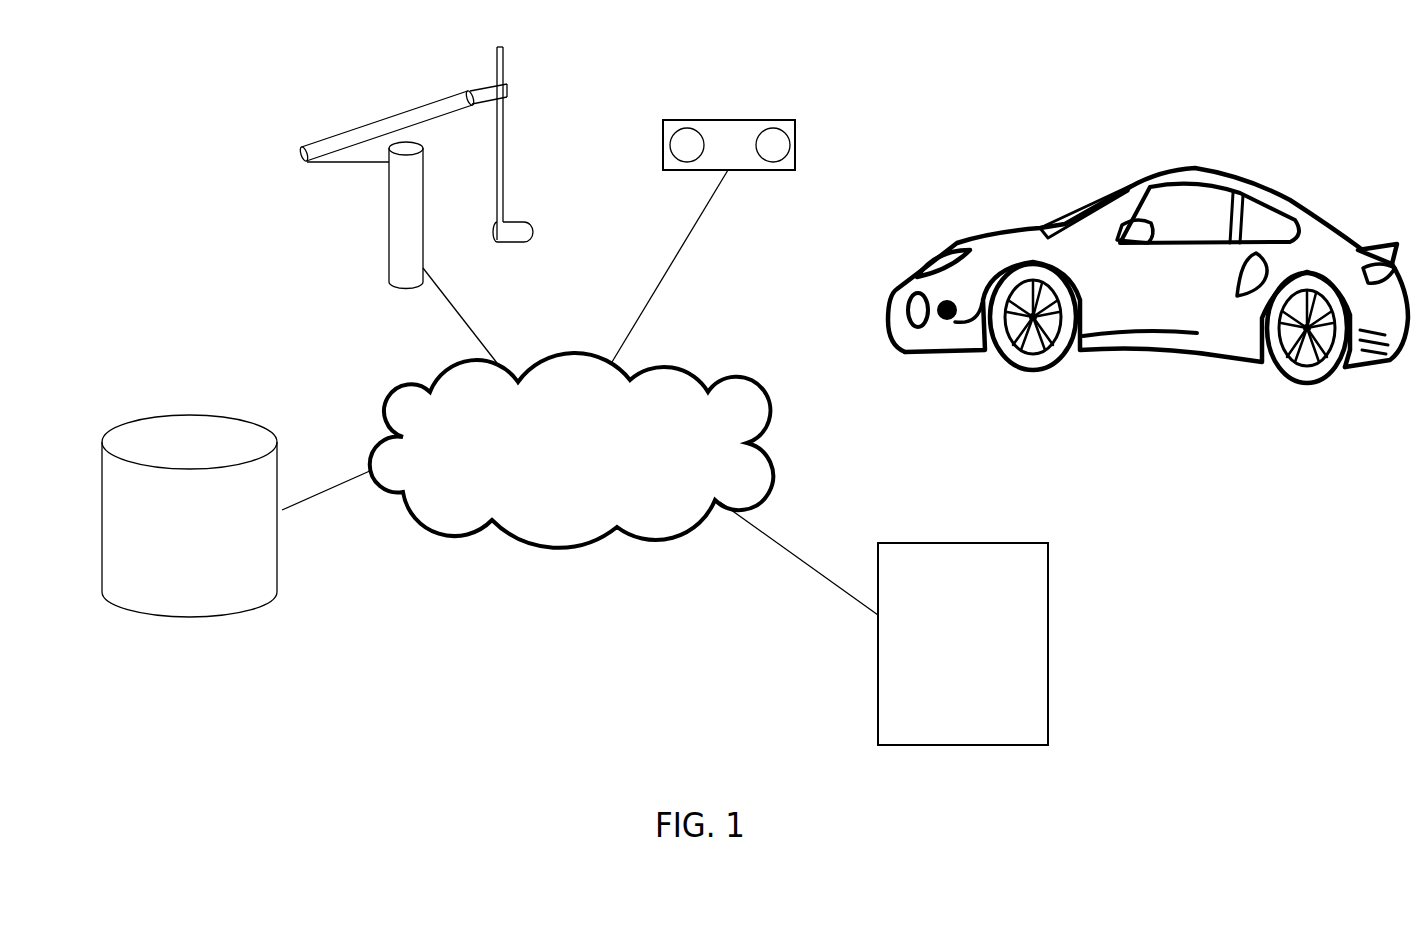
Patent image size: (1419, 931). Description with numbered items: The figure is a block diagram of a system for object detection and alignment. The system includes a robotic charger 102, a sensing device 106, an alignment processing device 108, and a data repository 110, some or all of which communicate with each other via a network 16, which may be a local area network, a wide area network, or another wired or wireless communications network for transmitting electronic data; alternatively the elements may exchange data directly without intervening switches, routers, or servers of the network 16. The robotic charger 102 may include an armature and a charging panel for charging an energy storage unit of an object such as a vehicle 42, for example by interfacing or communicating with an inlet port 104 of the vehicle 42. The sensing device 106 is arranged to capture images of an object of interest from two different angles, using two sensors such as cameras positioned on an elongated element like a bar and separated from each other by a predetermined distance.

The robotic charger 102 is at (313, 140).
The sensing device 106 is at (747, 120).
The inlet port 104 is at (950, 318).
The vehicle 42 is at (1168, 170).
The network 16 is at (608, 485).
The alignment processing device 108 is at (940, 732).
The data repository 110 is at (169, 603).